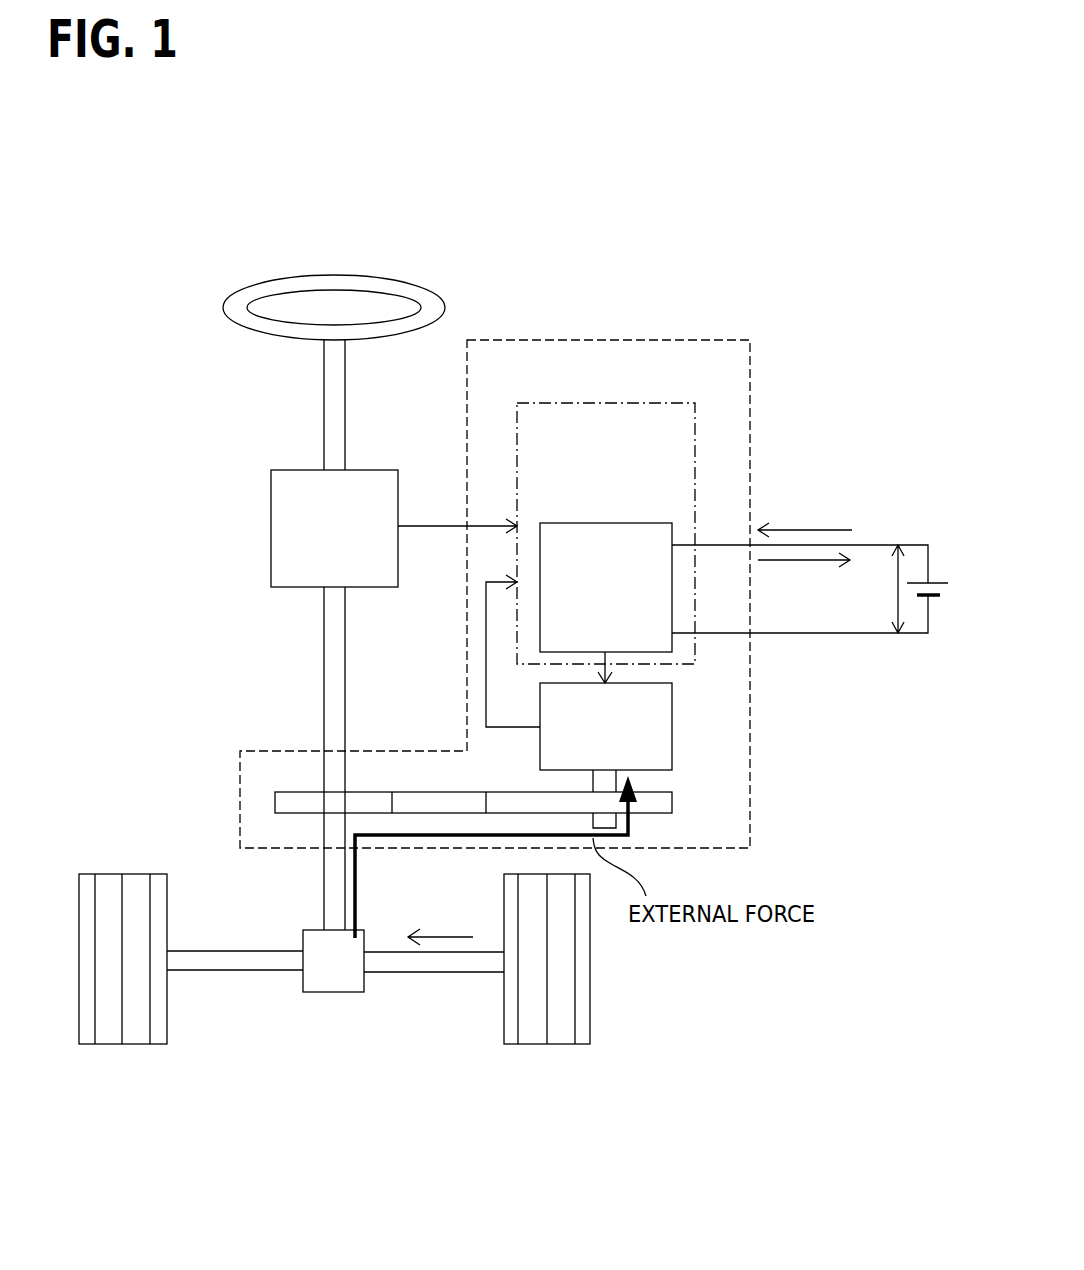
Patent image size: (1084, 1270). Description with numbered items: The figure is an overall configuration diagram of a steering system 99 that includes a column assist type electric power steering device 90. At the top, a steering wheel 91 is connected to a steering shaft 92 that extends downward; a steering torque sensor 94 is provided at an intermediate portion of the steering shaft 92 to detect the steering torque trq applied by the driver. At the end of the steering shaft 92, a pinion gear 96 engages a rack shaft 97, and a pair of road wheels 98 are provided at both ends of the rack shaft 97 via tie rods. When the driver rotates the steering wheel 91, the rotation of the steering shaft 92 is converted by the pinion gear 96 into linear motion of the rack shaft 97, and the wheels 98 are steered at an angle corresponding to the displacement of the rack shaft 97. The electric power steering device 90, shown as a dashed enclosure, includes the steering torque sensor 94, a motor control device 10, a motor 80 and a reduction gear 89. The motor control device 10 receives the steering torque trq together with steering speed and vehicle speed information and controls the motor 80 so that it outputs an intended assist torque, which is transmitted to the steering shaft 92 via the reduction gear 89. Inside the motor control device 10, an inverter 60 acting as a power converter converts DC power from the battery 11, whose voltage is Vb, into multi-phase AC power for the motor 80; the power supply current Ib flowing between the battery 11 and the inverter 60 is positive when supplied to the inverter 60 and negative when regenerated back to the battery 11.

The motor control device 10 is at (605, 403).
The battery 11 is at (940, 583).
The inverter 60 is at (603, 523).
The motor 80 is at (672, 727).
The reduction gear 89 is at (672, 800).
The electric power steering device 90 is at (633, 340).
The steering wheel 91 is at (223, 310).
The steering shaft 92 is at (324, 416).
The steering torque sensor 94 is at (271, 522).
The pinion gear 96 is at (338, 993).
The rack shaft 97 is at (230, 972).
The road wheels 98 is at (140, 1045).
The steering system 99 is at (148, 731).